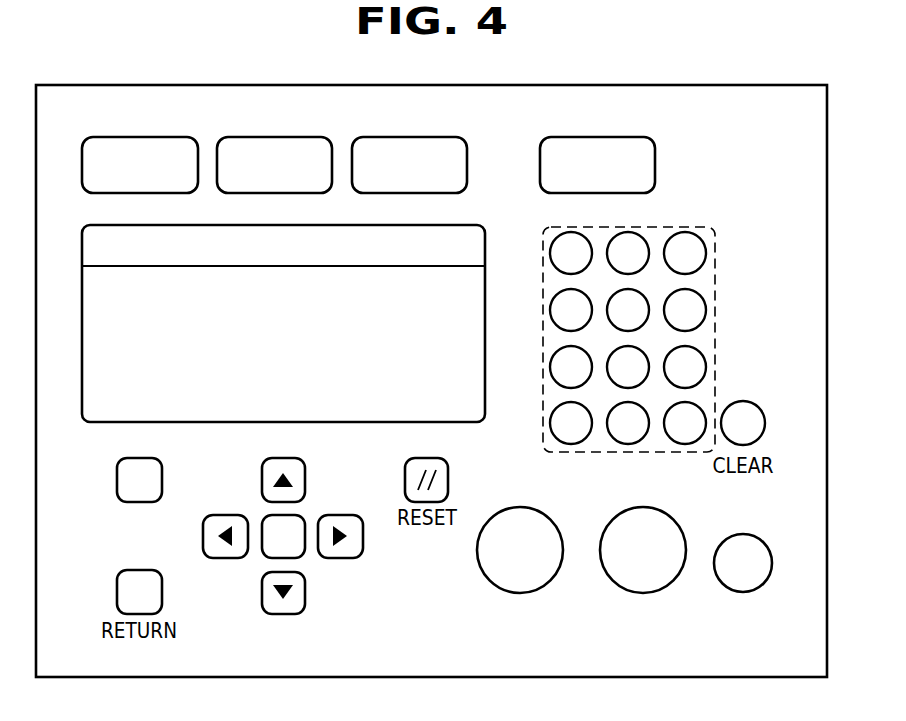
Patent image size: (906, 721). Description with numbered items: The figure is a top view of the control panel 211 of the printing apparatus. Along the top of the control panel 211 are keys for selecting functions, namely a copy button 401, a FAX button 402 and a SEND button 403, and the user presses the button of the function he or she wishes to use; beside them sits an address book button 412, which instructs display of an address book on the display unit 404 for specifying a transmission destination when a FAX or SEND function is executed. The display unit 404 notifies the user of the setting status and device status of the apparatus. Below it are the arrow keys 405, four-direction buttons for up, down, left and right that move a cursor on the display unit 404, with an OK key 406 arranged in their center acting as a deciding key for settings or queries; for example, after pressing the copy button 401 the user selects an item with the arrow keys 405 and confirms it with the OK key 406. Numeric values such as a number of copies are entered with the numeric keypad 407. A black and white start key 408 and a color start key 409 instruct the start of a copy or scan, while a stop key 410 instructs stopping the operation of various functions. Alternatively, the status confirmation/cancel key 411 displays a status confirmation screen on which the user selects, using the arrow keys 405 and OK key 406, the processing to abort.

The control panel 211 is at (752, 85).
The copy button 401 is at (128, 137).
The FAX button 402 is at (262, 137).
The SEND button 403 is at (398, 137).
The display unit 404 is at (447, 225).
The arrow keys 405 is at (306, 546).
The OK key 406 is at (298, 515).
The numeric keypad 407 is at (683, 227).
The black and white start key 408 is at (537, 508).
The color start key 409 is at (675, 517).
The stop key 410 is at (753, 537).
The status confirmation/cancel key 411 is at (162, 472).
The address book button 412 is at (610, 137).